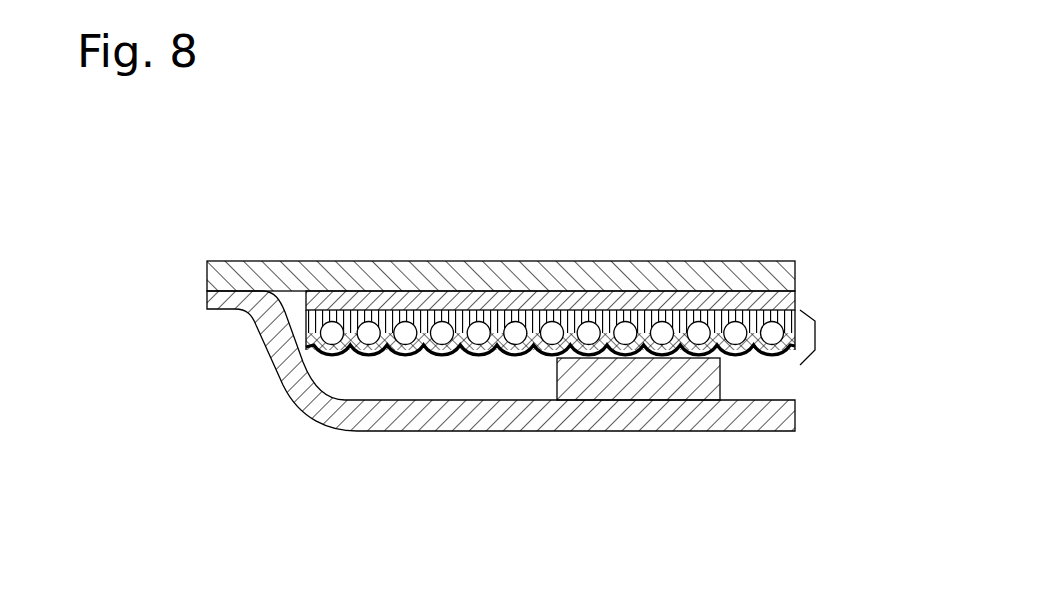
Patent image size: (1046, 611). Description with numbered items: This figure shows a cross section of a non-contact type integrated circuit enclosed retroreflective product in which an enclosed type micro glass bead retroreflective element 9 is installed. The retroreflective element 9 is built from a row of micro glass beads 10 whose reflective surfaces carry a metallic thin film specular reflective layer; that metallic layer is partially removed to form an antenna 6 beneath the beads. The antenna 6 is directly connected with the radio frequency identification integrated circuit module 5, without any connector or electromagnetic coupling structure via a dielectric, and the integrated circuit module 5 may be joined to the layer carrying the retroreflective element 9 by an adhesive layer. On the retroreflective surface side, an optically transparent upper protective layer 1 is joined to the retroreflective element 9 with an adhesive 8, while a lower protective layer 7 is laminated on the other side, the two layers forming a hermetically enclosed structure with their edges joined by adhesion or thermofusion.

The upper protective layer 1 is at (501, 190).
The adhesive 8 is at (550, 230).
The micro glass beads 10 is at (552, 278).
The antenna 6 is at (550, 404).
The radio frequency identification integrated circuit module 5 is at (651, 427).
The lower protective layer 7 is at (501, 426).
The enclosed type micro glass bead retroreflective element 9 is at (838, 336).